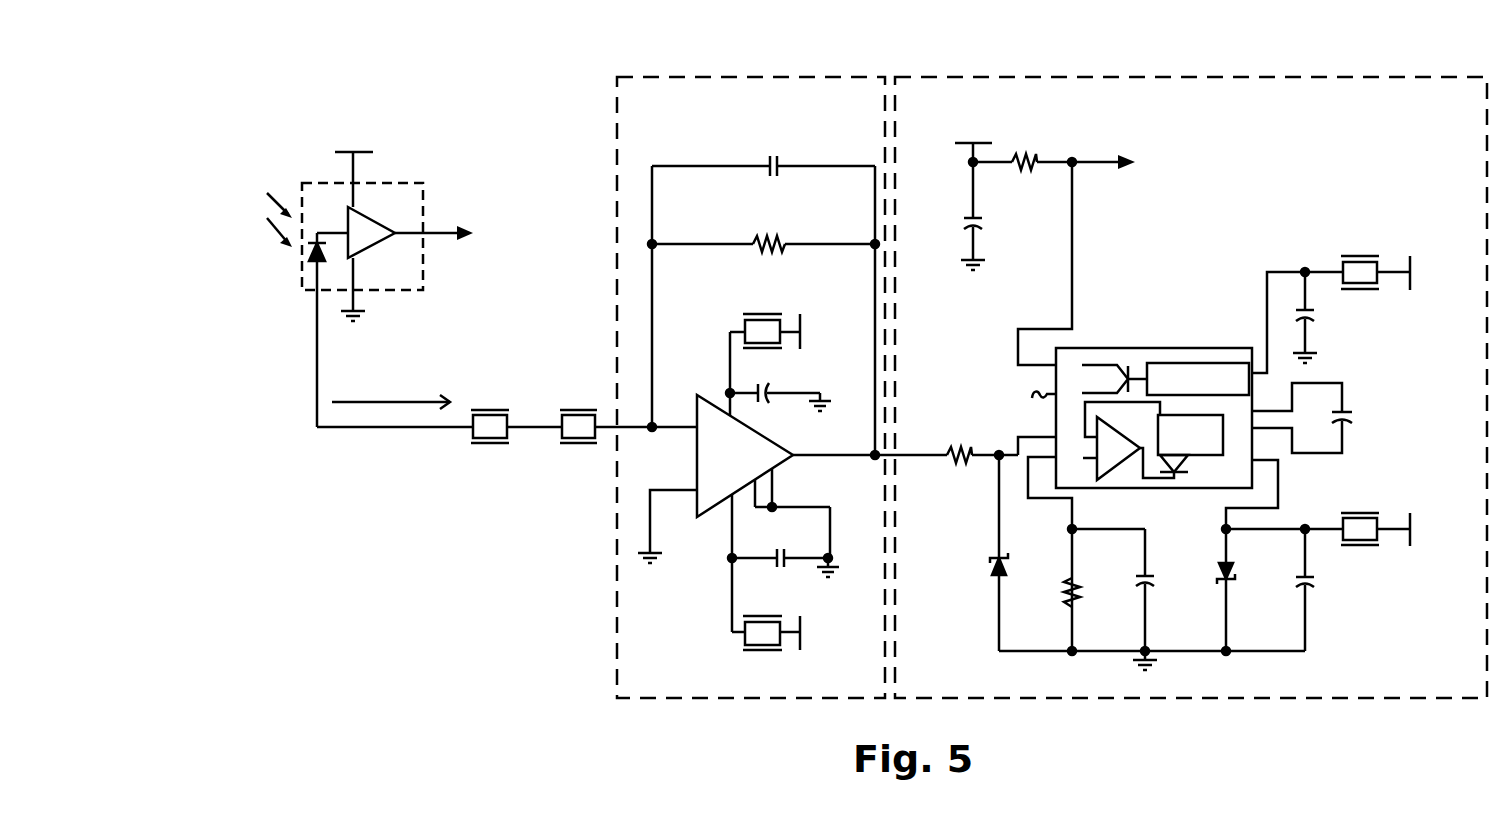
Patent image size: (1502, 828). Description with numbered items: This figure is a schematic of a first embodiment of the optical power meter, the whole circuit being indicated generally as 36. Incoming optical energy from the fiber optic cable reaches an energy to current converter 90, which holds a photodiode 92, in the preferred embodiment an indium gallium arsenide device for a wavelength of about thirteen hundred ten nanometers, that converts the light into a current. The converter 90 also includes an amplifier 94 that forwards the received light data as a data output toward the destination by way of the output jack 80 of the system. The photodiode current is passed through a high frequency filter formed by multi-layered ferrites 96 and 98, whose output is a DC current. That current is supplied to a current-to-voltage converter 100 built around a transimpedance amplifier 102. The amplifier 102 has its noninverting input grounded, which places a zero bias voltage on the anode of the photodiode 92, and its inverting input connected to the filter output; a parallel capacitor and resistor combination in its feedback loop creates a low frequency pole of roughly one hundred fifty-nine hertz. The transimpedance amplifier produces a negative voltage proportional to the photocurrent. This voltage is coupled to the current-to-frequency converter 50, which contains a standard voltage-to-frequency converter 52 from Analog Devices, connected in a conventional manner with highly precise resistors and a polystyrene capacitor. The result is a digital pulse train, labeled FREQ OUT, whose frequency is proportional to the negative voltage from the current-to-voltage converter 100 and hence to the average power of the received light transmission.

The optical detector circuit 36 is at (512, 661).
The current-to-frequency converter 50 is at (1168, 77).
The voltage-to-frequency converter 52 is at (1232, 348).
The output jack 80 is at (460, 236).
The energy to current converter 90 is at (388, 183).
The photodiode 92 is at (305, 253).
The amplifier 94 is at (375, 247).
The multi-layered ferrite 96 is at (492, 445).
The multi-layered ferrite 98 is at (577, 445).
The current-to-voltage converter 100 is at (705, 77).
The transimpedance amplifier 102 is at (763, 435).